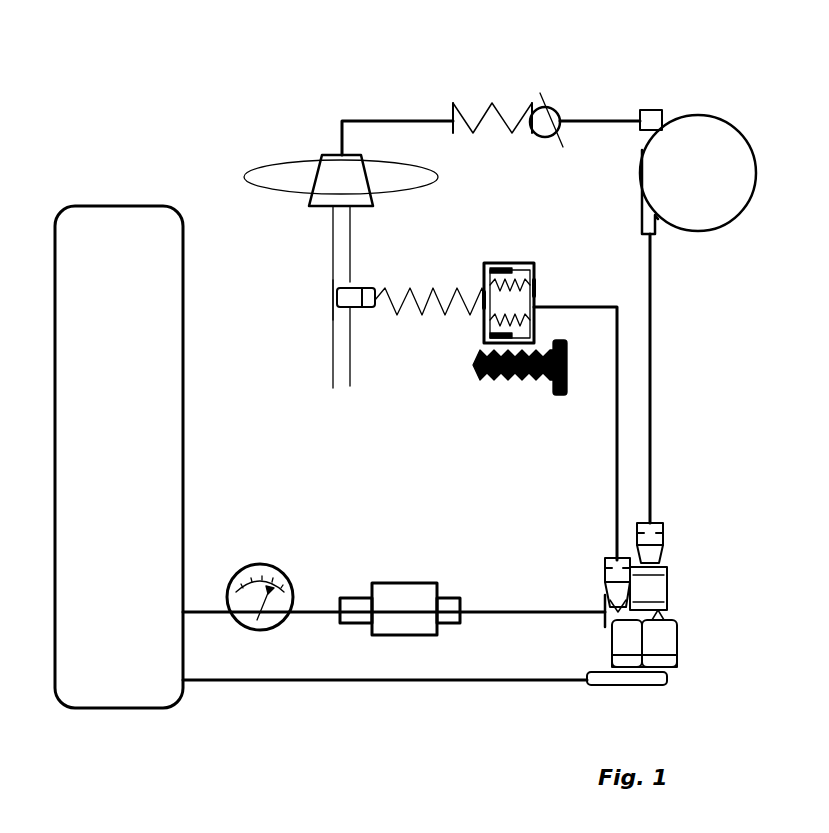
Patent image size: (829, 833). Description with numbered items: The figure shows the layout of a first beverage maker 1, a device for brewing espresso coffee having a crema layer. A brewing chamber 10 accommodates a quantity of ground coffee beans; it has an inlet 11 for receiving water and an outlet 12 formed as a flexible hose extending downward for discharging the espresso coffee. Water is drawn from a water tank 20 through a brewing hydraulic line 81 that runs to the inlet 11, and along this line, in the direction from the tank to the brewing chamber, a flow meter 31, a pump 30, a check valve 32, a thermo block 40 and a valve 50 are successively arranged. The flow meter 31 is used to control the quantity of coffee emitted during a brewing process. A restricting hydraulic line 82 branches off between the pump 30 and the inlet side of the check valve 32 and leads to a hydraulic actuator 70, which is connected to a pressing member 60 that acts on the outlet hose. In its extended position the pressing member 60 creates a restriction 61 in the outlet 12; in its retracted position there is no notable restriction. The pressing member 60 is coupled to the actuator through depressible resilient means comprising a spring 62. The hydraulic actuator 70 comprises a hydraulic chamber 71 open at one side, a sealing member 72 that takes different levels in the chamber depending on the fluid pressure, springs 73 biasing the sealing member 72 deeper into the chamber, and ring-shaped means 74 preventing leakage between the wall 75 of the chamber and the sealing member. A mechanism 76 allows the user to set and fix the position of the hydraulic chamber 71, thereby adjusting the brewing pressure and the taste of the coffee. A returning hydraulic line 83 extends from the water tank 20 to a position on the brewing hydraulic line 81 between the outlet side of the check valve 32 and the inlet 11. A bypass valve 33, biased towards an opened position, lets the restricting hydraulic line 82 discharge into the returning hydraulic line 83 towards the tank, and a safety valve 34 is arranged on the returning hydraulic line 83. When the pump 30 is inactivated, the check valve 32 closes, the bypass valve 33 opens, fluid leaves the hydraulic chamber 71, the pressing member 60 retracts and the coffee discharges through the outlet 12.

The first beverage maker 1 is at (192, 142).
The brewing chamber 10 is at (288, 172).
The inlet 11 is at (340, 153).
The outlet 12 is at (338, 215).
The water tank 20 is at (143, 240).
The pump 30 is at (404, 598).
The flow meter 31 is at (259, 562).
The check valve 32 is at (652, 588).
The bypass valve 33 is at (615, 640).
The safety valve 34 is at (663, 640).
The thermo block 40 is at (705, 147).
The valve 50 is at (545, 110).
The pressing member 60 is at (355, 307).
The restriction 61 is at (335, 297).
The spring 62 is at (410, 310).
The hydraulic actuator 70 is at (502, 260).
The hydraulic chamber 71 is at (540, 268).
The sealing member 72 is at (485, 285).
The springs 73 is at (538, 287).
The ring-shaped means 74 is at (510, 262).
The wall 75 is at (530, 262).
The mechanism for setting the brewing pressure 76 is at (505, 383).
The brewing hydraulic line 81 is at (512, 610).
The restricting hydraulic line 82 is at (615, 483).
The returning hydraulic line 83 is at (318, 683).